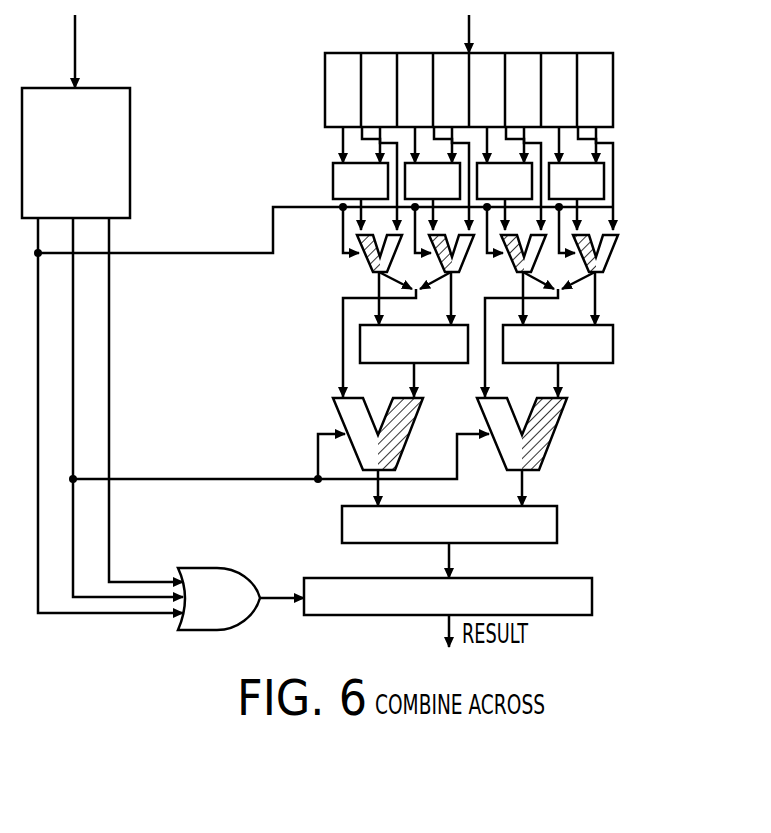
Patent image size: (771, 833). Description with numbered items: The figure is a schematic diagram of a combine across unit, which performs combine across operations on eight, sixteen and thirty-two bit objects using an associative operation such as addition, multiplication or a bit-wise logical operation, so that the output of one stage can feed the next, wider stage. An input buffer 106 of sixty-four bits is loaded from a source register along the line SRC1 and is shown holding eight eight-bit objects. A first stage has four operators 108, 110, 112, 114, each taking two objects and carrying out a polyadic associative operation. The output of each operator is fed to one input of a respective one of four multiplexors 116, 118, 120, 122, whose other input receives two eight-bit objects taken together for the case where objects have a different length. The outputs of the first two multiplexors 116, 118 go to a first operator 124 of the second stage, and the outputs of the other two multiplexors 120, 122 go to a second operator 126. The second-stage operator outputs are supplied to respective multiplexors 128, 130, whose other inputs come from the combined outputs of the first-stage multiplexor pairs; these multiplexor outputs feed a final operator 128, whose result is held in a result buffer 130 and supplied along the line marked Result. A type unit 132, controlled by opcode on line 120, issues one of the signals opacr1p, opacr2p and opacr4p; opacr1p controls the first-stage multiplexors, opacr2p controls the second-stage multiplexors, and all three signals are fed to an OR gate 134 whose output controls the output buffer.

The input buffer 106 is at (613, 82).
The first-stage operator 108 is at (604, 168).
The first-stage operator 110 is at (522, 205).
The first-stage operator 112 is at (405, 200).
The first-stage operator 114 is at (333, 170).
The first-stage multiplexor 116 is at (616, 250).
The first-stage multiplexor 118 is at (592, 275).
The first-stage multiplexor / opcode line 120 is at (77, 62).
The first-stage multiplexor 122 is at (367, 262).
The first operator of second stage 124 is at (613, 337).
The second operator of second stage 126 is at (360, 350).
The second-stage multiplexor / final operator 128 is at (566, 418).
The second-stage multiplexor / result buffer 130 is at (334, 403).
The type unit 132 is at (130, 120).
The OR gate 134 is at (240, 575).